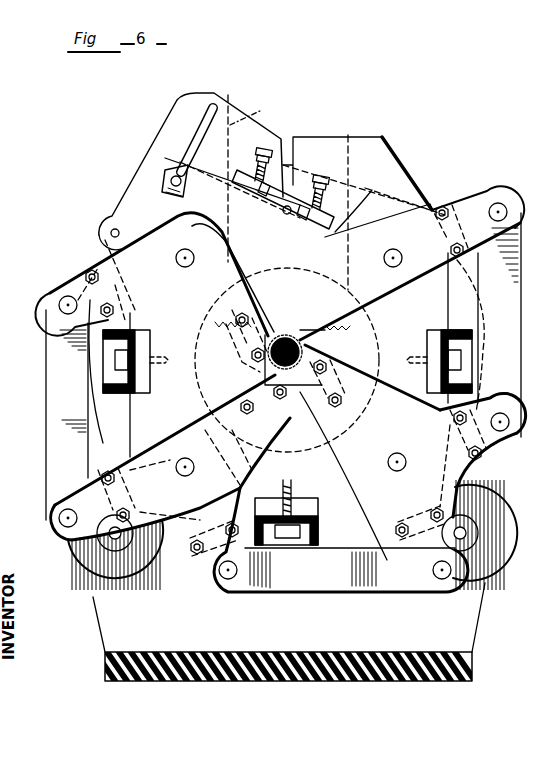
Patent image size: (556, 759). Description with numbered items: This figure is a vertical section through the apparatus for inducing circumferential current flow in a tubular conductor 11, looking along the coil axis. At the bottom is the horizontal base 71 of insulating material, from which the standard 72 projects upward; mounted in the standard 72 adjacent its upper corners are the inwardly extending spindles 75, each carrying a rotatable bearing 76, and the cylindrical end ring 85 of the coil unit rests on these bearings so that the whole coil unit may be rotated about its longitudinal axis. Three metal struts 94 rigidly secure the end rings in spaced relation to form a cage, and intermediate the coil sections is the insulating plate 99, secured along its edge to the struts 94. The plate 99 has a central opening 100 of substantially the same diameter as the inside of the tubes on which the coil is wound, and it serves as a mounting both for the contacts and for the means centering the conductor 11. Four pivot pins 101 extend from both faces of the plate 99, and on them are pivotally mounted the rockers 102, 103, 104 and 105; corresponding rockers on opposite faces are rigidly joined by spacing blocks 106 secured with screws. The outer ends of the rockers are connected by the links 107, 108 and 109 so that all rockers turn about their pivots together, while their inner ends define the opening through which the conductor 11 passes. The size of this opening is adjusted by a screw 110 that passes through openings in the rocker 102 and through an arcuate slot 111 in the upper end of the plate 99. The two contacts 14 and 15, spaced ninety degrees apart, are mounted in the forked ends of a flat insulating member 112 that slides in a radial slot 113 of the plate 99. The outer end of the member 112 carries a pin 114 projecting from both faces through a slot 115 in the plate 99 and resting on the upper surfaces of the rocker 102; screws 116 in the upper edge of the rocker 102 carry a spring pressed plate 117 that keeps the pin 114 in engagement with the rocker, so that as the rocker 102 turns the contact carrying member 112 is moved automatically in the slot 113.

The tubular conductor 11 is at (300, 374).
The contact 14 is at (275, 334).
The contact 15 is at (305, 334).
The horizontal base 71 is at (192, 652).
The standard 72 is at (97, 620).
The spindle 75 is at (478, 533).
The bearing 76 is at (128, 580).
The end ring 85 is at (100, 440).
The metal strut 94 is at (452, 322).
The plate 99 is at (408, 173).
The central opening 100 is at (373, 350).
The pivot pin 101 is at (191, 267).
The rocker 102 is at (350, 236).
The rocker 103 is at (349, 472).
The rocker 104 is at (248, 478).
The rocker 105 is at (236, 358).
The spacing block 106 is at (106, 498).
The link 107 is at (521, 334).
The link 108 is at (340, 594).
The link 109 is at (46, 432).
The screw 110 is at (163, 182).
The arcuate slot 111 is at (203, 128).
The contact carrying member 112 is at (363, 198).
The radial slot 113 is at (260, 114).
The pin 114 is at (285, 214).
The slot 115 is at (293, 140).
The screw 116 is at (317, 180).
The spring pressed plate 117 is at (324, 240).